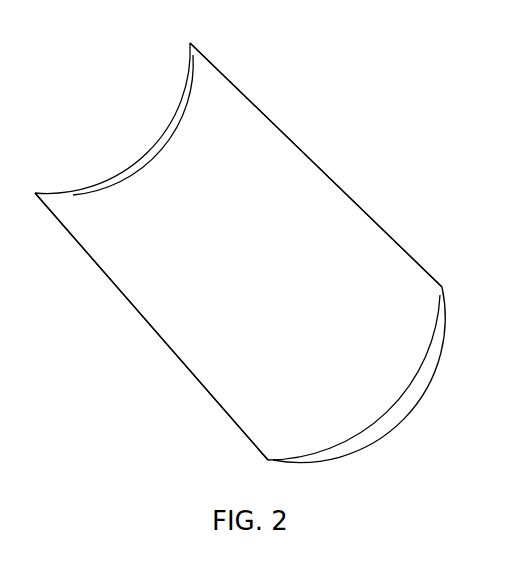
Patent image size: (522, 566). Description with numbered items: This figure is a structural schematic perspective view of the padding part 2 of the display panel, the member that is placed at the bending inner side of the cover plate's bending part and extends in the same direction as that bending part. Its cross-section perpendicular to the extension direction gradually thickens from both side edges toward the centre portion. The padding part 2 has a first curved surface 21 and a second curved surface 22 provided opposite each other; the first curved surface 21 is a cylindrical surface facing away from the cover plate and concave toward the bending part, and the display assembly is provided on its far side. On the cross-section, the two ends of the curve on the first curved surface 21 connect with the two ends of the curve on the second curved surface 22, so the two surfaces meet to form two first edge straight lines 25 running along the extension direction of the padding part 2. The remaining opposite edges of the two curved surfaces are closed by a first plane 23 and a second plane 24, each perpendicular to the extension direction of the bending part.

The padding part 2 is at (365, 125).
The first curved surface 21 is at (213, 302).
The second curved surface 22 is at (431, 380).
The first plane 23 is at (148, 157).
The second plane 24 is at (393, 417).
The first edge straight lines 25 is at (367, 210).